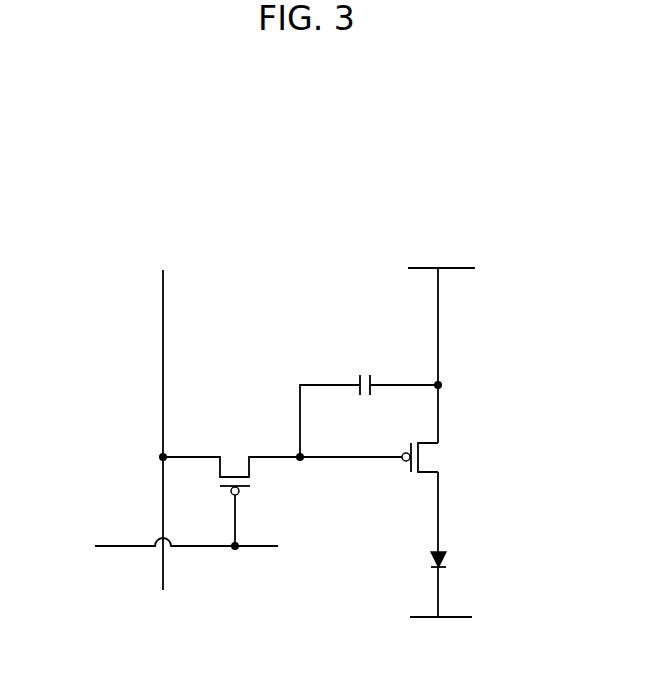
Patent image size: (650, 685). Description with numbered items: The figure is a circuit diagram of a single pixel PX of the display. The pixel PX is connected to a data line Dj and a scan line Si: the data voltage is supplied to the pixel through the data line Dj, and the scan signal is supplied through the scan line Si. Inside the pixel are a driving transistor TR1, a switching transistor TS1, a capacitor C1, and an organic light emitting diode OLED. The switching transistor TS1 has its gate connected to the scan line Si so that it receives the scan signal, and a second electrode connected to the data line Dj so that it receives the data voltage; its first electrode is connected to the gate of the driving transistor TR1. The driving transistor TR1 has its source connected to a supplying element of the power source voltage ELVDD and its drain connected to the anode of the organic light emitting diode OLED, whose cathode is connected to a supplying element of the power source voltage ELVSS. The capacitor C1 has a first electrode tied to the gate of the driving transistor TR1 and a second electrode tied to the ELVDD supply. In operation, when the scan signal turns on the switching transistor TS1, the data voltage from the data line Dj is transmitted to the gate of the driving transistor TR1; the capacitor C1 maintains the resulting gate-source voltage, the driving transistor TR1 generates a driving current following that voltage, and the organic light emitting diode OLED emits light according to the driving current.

The pixel PX is at (321, 146).
The data line Dj is at (163, 590).
The scan line Si is at (118, 547).
The switching transistor TS1 is at (231, 485).
The capacitor C1 is at (369, 399).
The power source voltage ELVDD is at (441, 340).
The driving transistor TR1 is at (391, 497).
The organic light emitting diode OLED is at (468, 580).
The power source voltage ELVSS is at (441, 634).